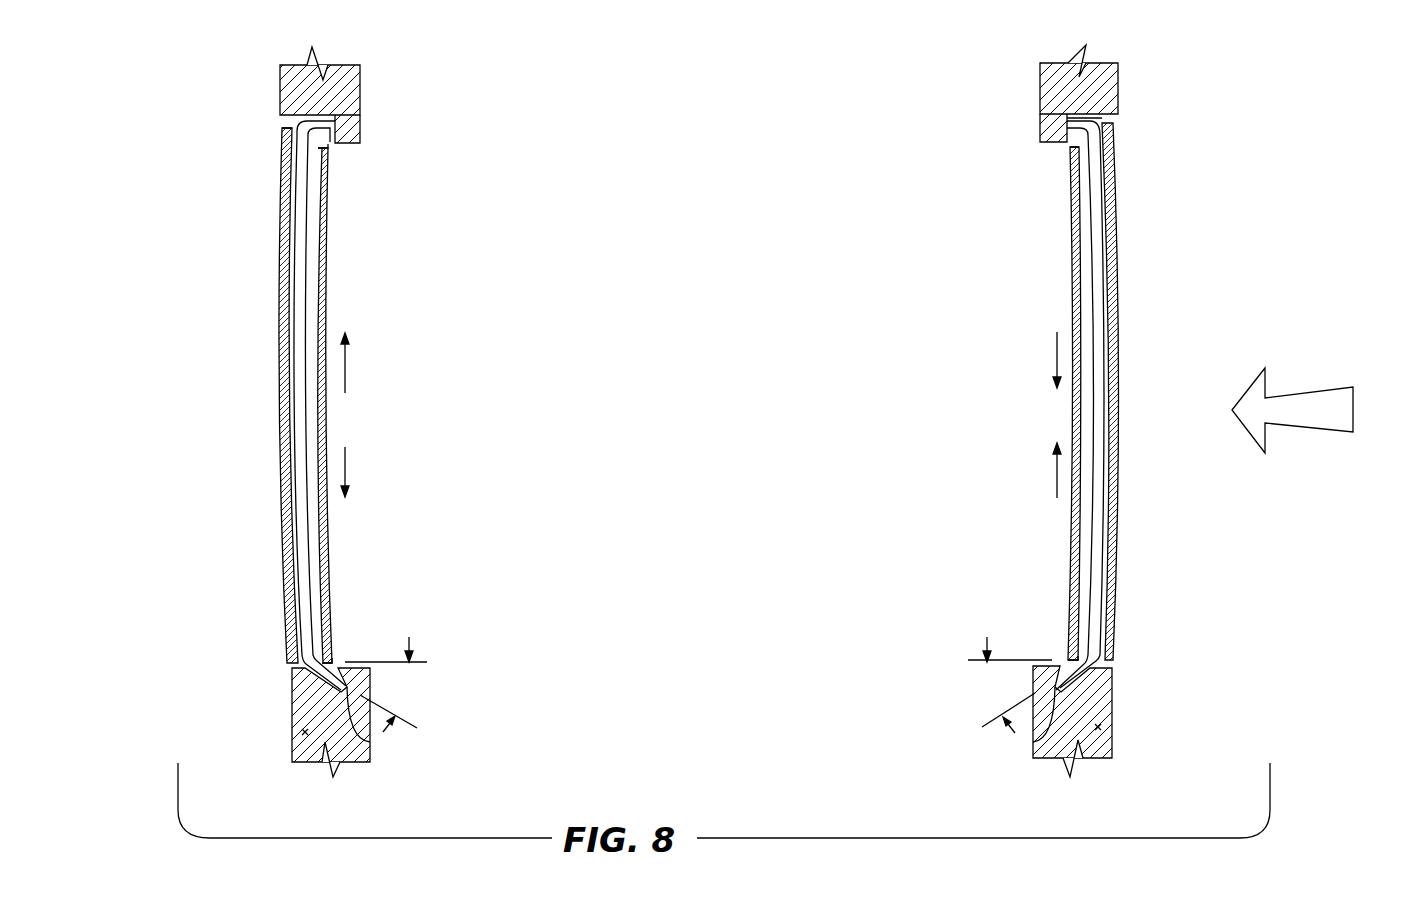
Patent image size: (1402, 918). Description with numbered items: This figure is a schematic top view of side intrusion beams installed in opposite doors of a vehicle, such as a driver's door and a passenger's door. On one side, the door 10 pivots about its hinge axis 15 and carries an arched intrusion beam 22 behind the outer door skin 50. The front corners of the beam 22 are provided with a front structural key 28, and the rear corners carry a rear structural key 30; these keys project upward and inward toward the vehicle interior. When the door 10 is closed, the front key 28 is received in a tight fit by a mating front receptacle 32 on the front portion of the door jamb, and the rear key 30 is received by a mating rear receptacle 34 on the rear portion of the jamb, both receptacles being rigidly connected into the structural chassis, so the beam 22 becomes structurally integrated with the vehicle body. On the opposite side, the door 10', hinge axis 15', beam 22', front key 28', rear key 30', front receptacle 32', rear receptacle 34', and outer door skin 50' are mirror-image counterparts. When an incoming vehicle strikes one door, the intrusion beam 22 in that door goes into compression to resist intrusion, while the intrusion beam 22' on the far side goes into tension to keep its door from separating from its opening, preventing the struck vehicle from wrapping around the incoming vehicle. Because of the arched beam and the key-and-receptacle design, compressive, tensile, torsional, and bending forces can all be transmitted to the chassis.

The door 10 is at (1137, 411).
The door 10' is at (294, 420).
The hinge axis 15 is at (1136, 747).
The hinge axis 15' is at (260, 753).
The intrusion beam 22 is at (1126, 412).
The intrusion beam 22' is at (266, 412).
The front structural key 28 is at (1044, 642).
The front key 28' is at (361, 636).
The rear structural key 30 is at (1119, 129).
The rear key 30' is at (340, 160).
The front receptacle 32 is at (1013, 732).
The front receptacle 32' is at (385, 740).
The rear receptacle 34 is at (1018, 125).
The rear receptacle 34' is at (381, 116).
The outer door skin 50 is at (1147, 391).
The outer door skin 50' is at (245, 395).